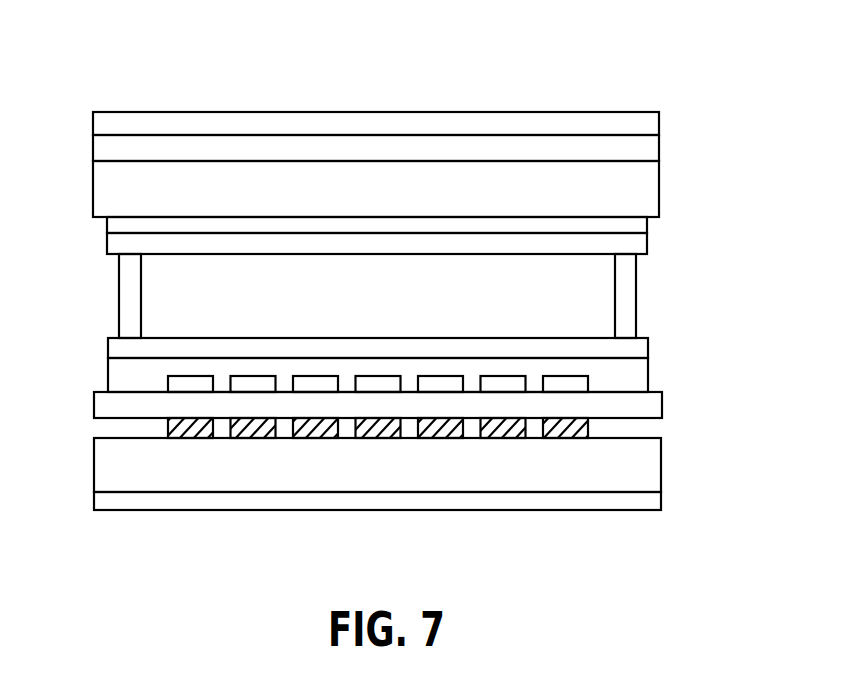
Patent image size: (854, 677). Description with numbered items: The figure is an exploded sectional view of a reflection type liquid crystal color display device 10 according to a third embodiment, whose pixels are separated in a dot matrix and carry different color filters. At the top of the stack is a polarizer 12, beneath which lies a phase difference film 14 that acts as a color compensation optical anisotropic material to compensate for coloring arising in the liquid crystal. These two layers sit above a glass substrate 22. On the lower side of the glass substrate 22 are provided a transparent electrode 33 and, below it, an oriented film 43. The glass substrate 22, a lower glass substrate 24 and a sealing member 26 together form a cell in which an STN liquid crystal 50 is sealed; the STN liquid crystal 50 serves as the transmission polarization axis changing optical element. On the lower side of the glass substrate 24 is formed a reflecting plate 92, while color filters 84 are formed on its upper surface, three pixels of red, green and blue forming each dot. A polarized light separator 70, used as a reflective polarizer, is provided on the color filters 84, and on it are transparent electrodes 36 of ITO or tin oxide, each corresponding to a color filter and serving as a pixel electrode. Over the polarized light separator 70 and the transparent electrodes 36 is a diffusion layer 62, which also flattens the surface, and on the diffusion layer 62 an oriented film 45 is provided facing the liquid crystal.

The liquid crystal display device 10 is at (567, 109).
The polarizer 12 is at (650, 129).
The phase difference film 14 is at (647, 154).
The glass substrate 22 is at (650, 194).
The transparent electrode 33 is at (640, 229).
The oriented film 43 is at (638, 247).
The STN liquid crystal 50 is at (165, 290).
The sealing member 26 is at (628, 303).
The transparent electrodes 36 is at (505, 385).
The oriented film 45 is at (640, 352).
The diffusion layer 62 is at (640, 381).
The polarized light separator 70 is at (652, 411).
The color filters 84 is at (505, 425).
The glass substrate 24 is at (650, 471).
The reflecting plate 92 is at (650, 498).